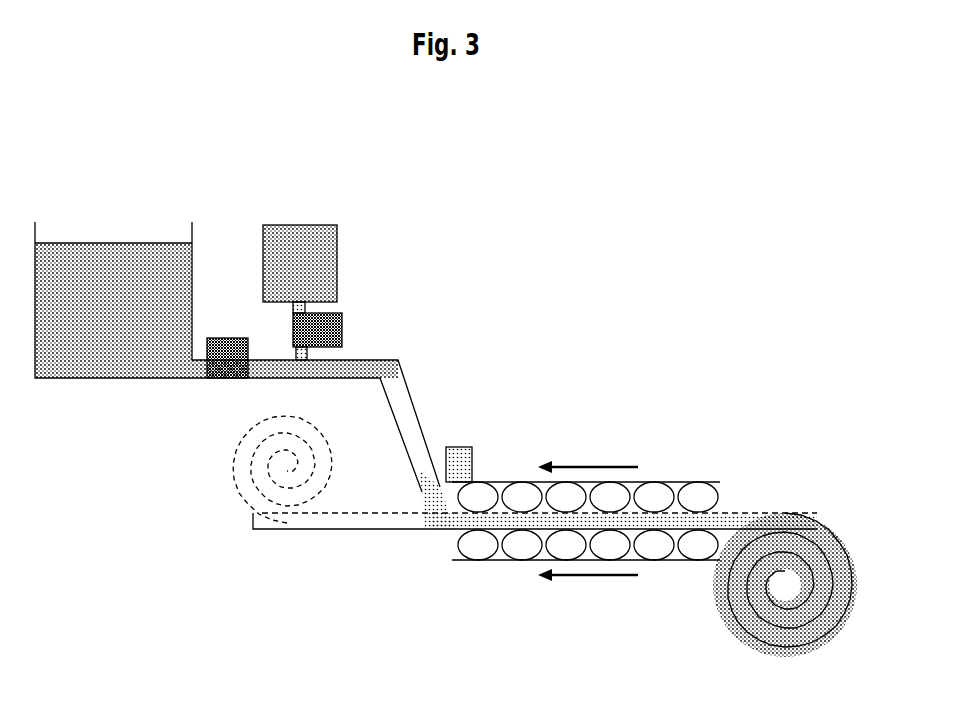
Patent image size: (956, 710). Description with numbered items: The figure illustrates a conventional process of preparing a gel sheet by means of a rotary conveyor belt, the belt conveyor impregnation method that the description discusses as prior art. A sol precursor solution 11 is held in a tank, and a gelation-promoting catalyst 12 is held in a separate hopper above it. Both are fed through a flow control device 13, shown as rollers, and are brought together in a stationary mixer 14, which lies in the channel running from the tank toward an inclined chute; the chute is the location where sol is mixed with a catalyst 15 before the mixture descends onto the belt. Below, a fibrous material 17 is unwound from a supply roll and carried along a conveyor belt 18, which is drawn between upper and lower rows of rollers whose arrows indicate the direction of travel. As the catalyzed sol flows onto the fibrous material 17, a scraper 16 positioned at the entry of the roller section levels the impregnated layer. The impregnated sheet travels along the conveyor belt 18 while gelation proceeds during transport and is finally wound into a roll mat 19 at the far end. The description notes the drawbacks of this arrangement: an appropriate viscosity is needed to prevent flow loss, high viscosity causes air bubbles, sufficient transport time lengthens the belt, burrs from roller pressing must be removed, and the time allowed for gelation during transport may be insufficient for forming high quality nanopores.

The sol precursor solution 11 is at (107, 258).
The gelation-promoting catalyst 12 is at (294, 225).
The flow control device 13 is at (292, 328).
The stationary mixer 14 is at (336, 366).
The location where sol is mixed with a catalyst 15 is at (391, 356).
The scraper 16 is at (462, 447).
The fibrous material 17 is at (232, 487).
The conveyor belt 18 is at (670, 560).
The roll mat 19 is at (810, 523).